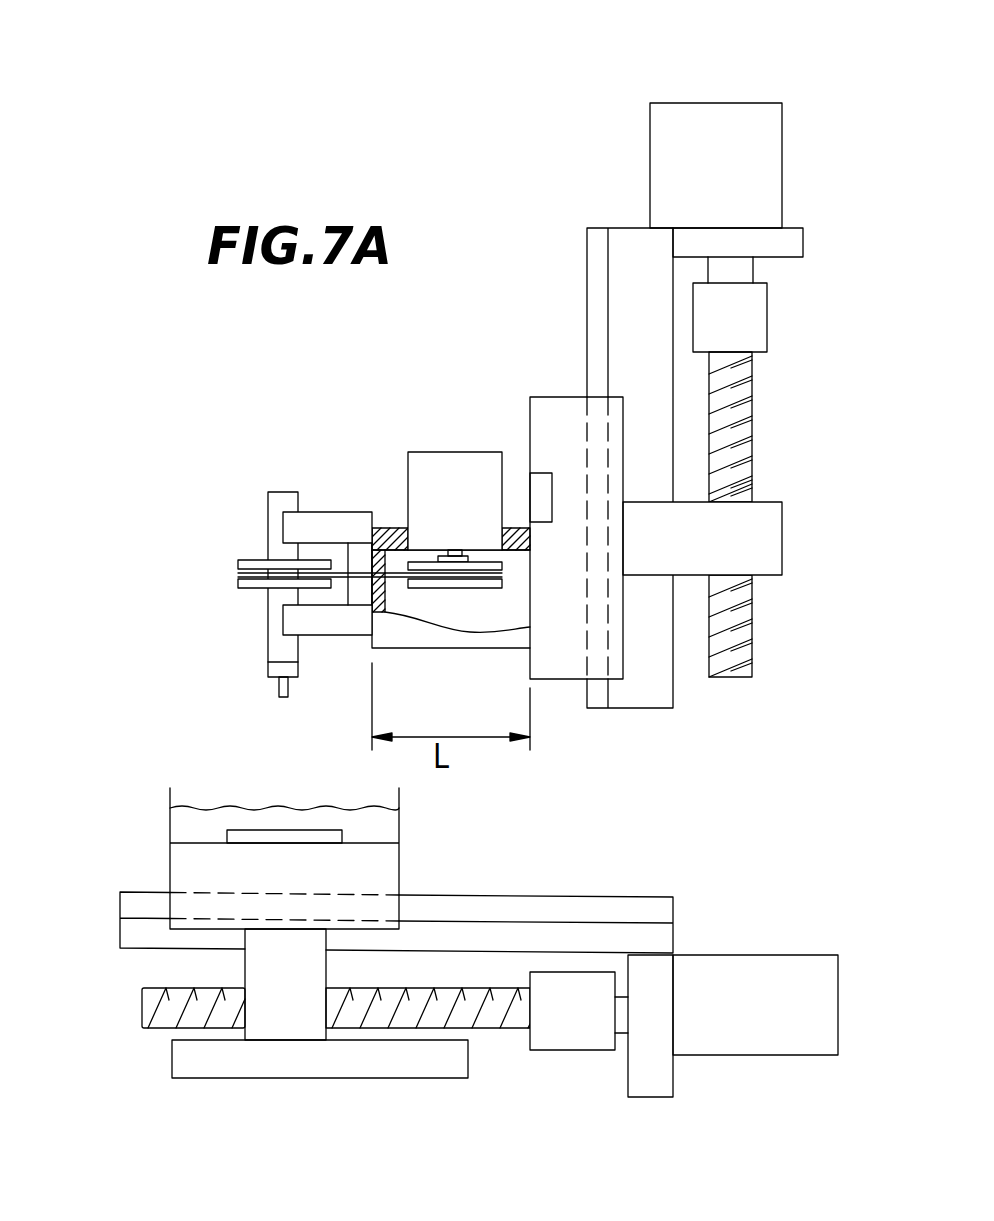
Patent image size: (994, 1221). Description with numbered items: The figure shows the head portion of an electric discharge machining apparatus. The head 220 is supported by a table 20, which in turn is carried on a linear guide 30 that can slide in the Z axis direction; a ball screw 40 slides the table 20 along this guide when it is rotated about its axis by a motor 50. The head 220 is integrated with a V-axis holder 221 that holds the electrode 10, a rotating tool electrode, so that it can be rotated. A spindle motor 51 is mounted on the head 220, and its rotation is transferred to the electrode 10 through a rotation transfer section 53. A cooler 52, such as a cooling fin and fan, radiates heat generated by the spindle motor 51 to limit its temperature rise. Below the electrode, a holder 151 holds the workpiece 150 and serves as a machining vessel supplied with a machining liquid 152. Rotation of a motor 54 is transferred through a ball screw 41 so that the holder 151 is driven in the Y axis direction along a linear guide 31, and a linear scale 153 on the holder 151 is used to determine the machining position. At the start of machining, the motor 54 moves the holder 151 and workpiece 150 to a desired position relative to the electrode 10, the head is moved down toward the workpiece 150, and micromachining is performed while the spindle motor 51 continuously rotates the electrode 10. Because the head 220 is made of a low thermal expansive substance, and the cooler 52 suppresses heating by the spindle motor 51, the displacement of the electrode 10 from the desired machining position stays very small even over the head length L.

The electrode 10 is at (268, 660).
The table 20 is at (550, 680).
The linear guide 30 is at (608, 228).
The linear guide 31 is at (118, 937).
The ball screw 40 is at (756, 649).
The ball screw 41 is at (493, 1032).
The motor 50 is at (737, 103).
The spindle motor 51 is at (440, 452).
The cooler 52 is at (542, 473).
The rotation transfer section 53 is at (343, 570).
The motor 54 is at (780, 955).
The workpiece 150 is at (262, 837).
The holder 151 is at (190, 845).
The machining liquid 152 is at (182, 826).
The linear scale 153 is at (230, 1078).
The head 220 is at (445, 650).
The V-axis holder 221 is at (342, 512).